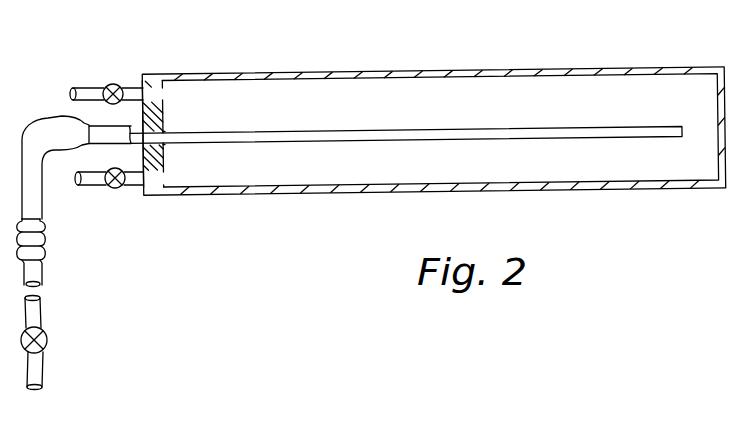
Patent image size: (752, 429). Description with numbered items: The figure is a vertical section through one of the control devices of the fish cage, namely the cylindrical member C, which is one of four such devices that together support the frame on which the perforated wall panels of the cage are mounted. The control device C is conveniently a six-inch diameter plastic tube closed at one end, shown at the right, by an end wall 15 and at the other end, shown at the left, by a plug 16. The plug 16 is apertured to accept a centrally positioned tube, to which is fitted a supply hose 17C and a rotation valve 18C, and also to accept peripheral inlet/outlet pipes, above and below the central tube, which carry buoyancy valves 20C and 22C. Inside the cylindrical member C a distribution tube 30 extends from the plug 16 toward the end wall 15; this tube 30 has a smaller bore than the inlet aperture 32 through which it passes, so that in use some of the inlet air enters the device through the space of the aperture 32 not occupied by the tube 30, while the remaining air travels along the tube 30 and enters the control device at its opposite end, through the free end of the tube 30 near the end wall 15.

The end wall 15 is at (727, 83).
The plug 16 is at (140, 82).
The distribution tube 30 is at (505, 127).
The inlet aperture 32 is at (167, 131).
The buoyancy valve 20C is at (113, 84).
The buoyancy valve 22C is at (116, 189).
The supply hose 17C is at (40, 372).
The rotation valve 18C is at (48, 331).
The cylindrical member C is at (388, 62).